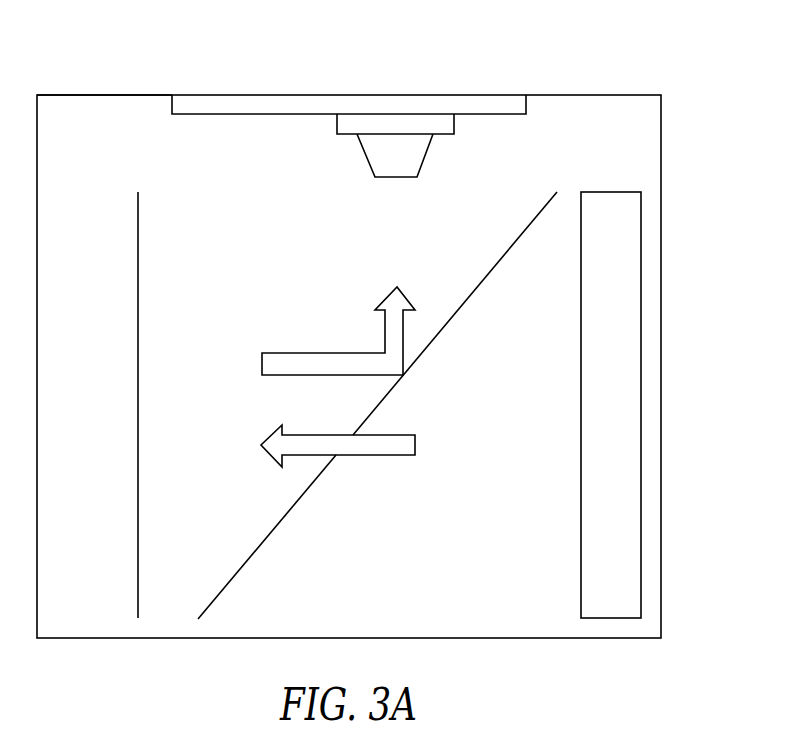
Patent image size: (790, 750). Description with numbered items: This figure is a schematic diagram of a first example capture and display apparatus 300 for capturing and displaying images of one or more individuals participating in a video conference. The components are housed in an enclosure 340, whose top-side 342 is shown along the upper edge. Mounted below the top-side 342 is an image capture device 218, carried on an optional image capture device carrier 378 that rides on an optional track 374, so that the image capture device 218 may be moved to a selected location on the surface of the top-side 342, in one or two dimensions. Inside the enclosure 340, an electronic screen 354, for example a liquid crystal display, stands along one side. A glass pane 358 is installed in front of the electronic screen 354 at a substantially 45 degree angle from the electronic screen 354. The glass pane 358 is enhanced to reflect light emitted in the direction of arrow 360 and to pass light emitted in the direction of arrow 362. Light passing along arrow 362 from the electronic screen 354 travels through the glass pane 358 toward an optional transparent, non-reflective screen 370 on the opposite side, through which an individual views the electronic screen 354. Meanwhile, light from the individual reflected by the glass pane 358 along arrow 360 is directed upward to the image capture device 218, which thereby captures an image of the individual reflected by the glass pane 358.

The capture and display apparatus 300 is at (108, 43).
The enclosure 340 is at (592, 95).
The top-side 342 is at (82, 97).
The track 374 is at (528, 103).
The image capture device carrier 378 is at (335, 123).
The image capture device 218 is at (396, 178).
The non-reflective screen 370 is at (136, 357).
The electronic screen 354 is at (642, 353).
The glass pane 358 is at (269, 534).
The 45 degree angle 45 is at (576, 312).
The arrow 360 is at (322, 352).
The arrow 362 is at (367, 456).